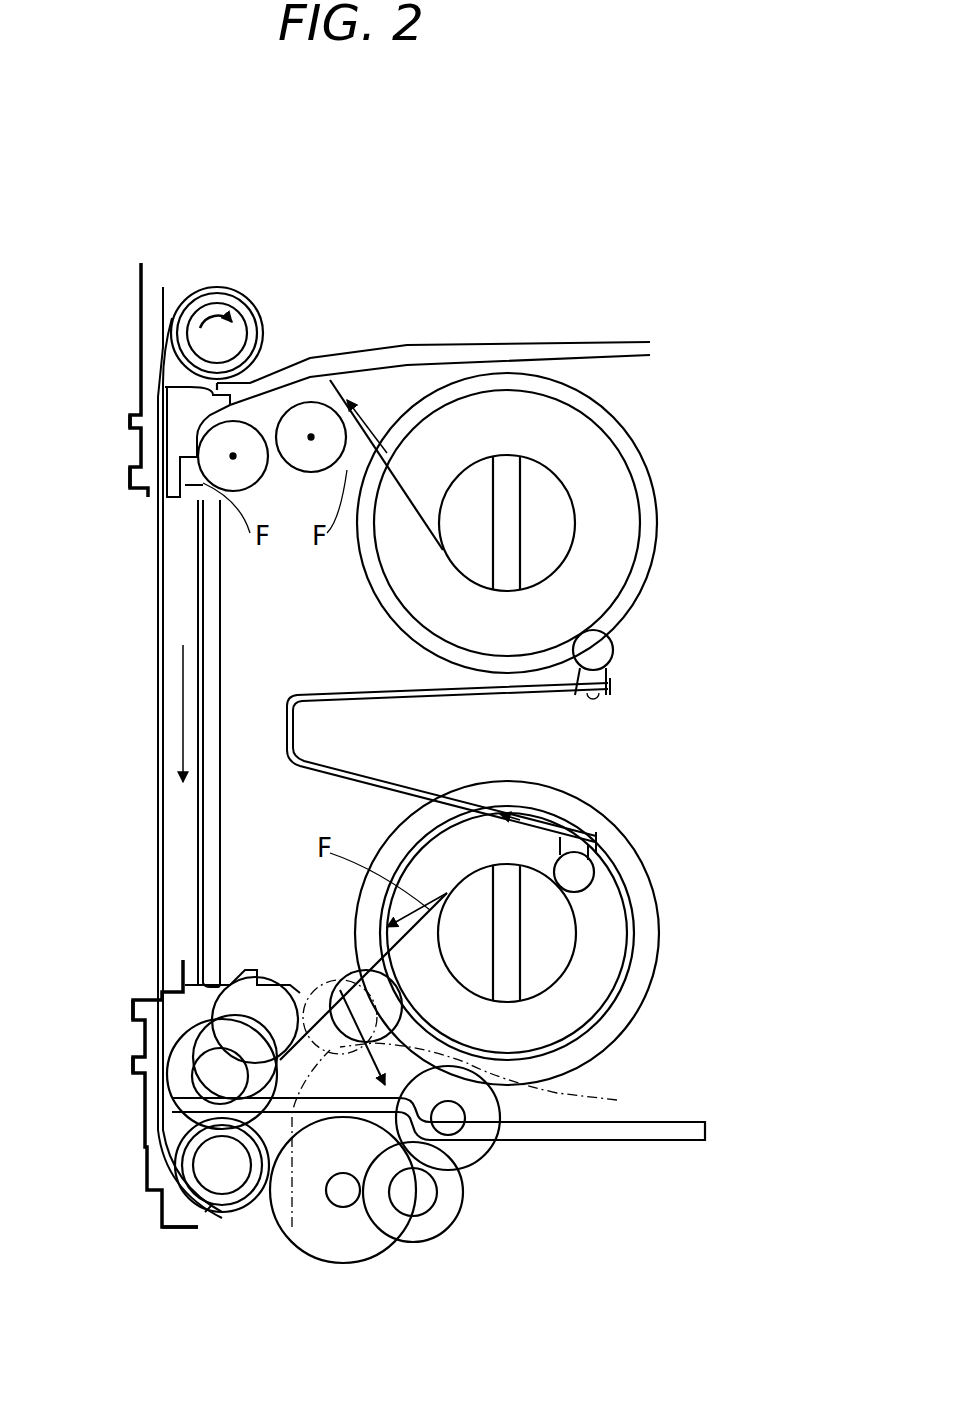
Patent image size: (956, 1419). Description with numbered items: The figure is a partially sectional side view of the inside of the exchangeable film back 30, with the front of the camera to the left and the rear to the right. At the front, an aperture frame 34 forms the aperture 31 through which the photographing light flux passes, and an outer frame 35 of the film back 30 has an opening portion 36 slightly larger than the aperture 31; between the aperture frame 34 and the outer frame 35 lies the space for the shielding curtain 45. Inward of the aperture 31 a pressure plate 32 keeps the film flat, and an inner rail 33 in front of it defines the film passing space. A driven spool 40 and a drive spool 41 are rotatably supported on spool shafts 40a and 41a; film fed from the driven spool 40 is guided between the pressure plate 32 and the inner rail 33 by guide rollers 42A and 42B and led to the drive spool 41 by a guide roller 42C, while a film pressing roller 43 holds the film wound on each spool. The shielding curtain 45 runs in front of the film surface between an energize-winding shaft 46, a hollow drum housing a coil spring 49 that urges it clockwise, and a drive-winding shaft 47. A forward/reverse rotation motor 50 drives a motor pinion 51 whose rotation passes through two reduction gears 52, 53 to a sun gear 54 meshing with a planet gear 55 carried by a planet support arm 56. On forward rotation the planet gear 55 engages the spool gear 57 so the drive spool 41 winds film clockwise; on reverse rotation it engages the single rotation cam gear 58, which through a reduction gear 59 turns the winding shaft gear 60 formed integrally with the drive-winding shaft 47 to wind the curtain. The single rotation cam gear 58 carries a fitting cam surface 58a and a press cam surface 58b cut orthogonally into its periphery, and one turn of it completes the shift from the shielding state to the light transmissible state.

The exchangeable film back 30 is at (275, 188).
The aperture 31 is at (162, 500).
The pressure plate 32 is at (222, 610).
The inner rail 33 is at (192, 832).
The aperture frame 34 is at (180, 397).
The outer frame 35 is at (130, 438).
The opening portion 36 is at (135, 490).
The driven spool 40 is at (557, 499).
The spool shaft 40a is at (560, 525).
The drive spool 41 is at (565, 930).
The spool shaft 41a is at (510, 935).
The guide roller 42A is at (318, 412).
The guide roller 42B is at (252, 433).
The guide roller 42C is at (190, 1008).
The film pressing roller 43 is at (600, 652).
The shielding curtain 45 is at (220, 295).
The energize-winding shaft 46 is at (245, 312).
The drive-winding shaft 47 is at (190, 1228).
The coil spring 49 is at (200, 317).
The forward/reverse rotation motor 50 is at (337, 1250).
The motor pinion 51 is at (358, 1205).
The reduction gear 52 is at (443, 1213).
The reduction gear 53 is at (470, 1155).
The sun gear 54 is at (500, 1145).
The planet gear 55 is at (390, 1010).
The planet support arm 56 is at (470, 897).
The spool gear 57 is at (627, 967).
The single rotation cam gear 58 is at (240, 968).
The fitting cam surface 58a is at (267, 973).
The press cam surface 58b is at (282, 983).
The reduction gear 59 is at (192, 1118).
The winding shaft gear 60 is at (192, 1205).